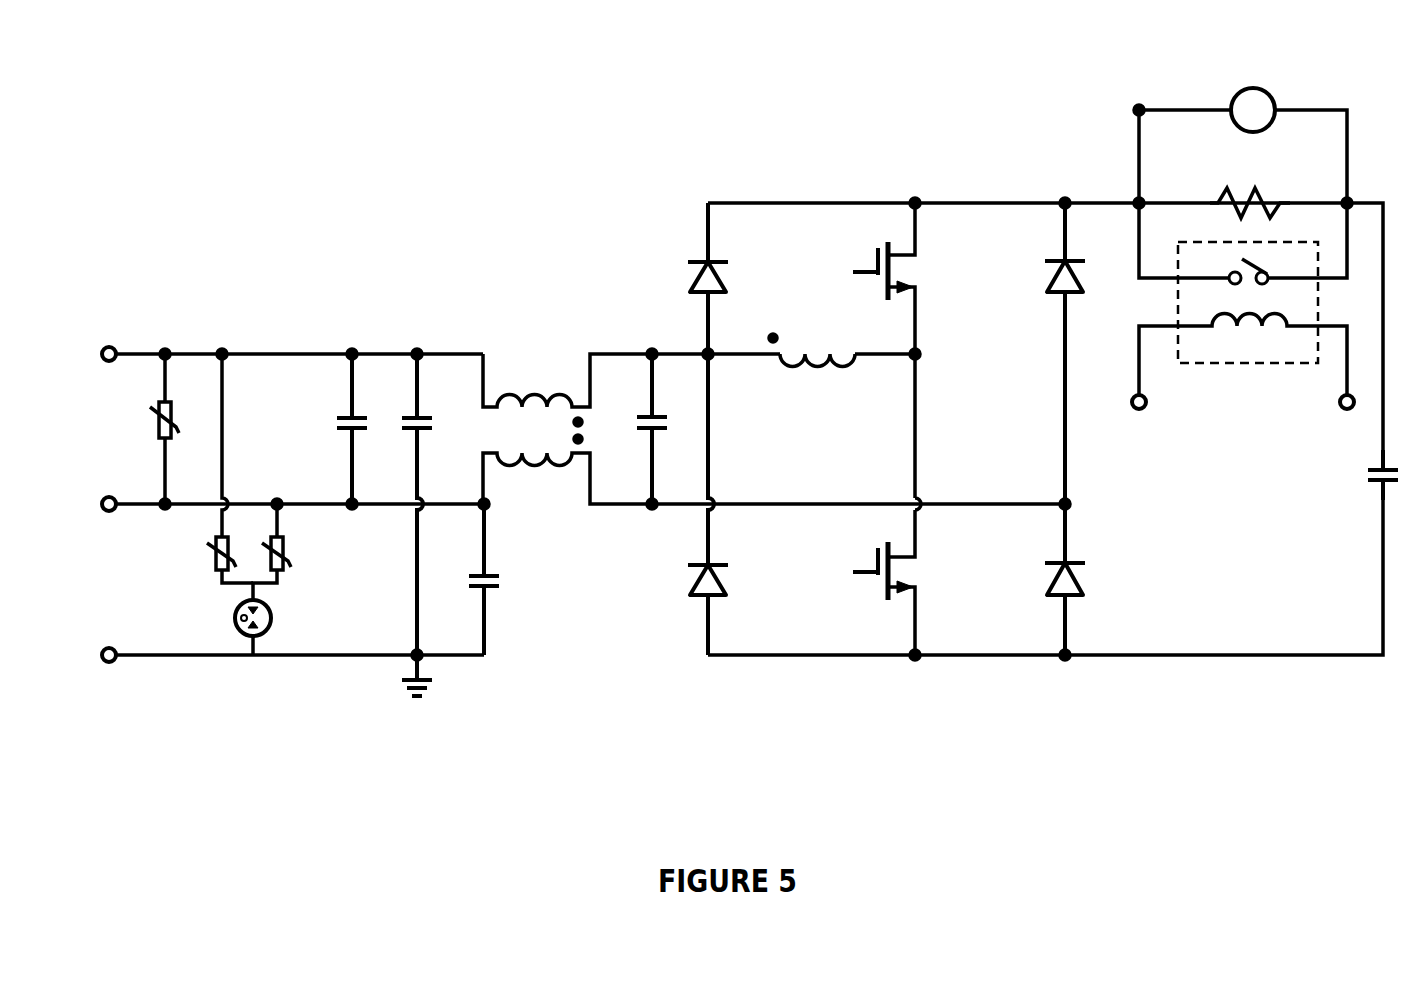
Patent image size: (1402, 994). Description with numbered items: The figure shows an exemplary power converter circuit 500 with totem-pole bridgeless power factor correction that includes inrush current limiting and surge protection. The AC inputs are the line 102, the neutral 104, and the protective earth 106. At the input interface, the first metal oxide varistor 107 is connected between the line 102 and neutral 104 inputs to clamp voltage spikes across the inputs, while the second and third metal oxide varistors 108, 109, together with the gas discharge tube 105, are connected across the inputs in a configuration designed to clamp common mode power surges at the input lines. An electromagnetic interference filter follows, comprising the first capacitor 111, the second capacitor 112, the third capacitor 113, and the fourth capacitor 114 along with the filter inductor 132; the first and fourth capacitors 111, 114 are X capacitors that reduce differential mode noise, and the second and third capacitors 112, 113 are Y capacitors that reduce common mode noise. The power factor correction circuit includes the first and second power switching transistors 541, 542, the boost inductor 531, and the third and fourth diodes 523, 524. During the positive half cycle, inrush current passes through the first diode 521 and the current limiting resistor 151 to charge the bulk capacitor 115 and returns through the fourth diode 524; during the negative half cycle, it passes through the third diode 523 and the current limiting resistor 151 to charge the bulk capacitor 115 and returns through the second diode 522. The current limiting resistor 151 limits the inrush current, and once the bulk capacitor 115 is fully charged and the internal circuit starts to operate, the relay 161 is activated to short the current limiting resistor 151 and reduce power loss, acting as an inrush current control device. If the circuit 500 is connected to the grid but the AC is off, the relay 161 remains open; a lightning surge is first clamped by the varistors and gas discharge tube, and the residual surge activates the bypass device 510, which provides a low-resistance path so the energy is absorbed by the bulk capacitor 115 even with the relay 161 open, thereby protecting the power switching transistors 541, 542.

The power converter circuit 500 is at (546, 120).
The line 102 is at (299, 347).
The neutral 104 is at (302, 497).
The protective earth 106 is at (300, 648).
The metal oxide varistor MOV1 107 is at (144, 429).
The metal oxide varistor MOV2 108 is at (207, 472).
The metal oxide varistor MOV3 109 is at (295, 552).
The gas discharge tube GDT1 105 is at (271, 622).
The capacitor C1 111 is at (342, 429).
The capacitor C2 112 is at (407, 525).
The capacitor C3 113 is at (473, 579).
The capacitor C4 114 is at (642, 429).
The bulk capacitor C5 115 is at (1373, 479).
The inductor L2 132 is at (558, 429).
The diode D1 521 is at (700, 278).
The diode D2 522 is at (700, 504).
The diode D3 523 is at (1056, 353).
The diode D4 524 is at (1056, 579).
The inductor L1 531 is at (812, 355).
The power switching transistor Q1 541 is at (877, 278).
The power switching transistor Q2 542 is at (880, 504).
The bypass device BD1 510 is at (1240, 145).
The current limiting resistor R1 151 is at (1245, 198).
The relay K1 161 is at (1243, 306).